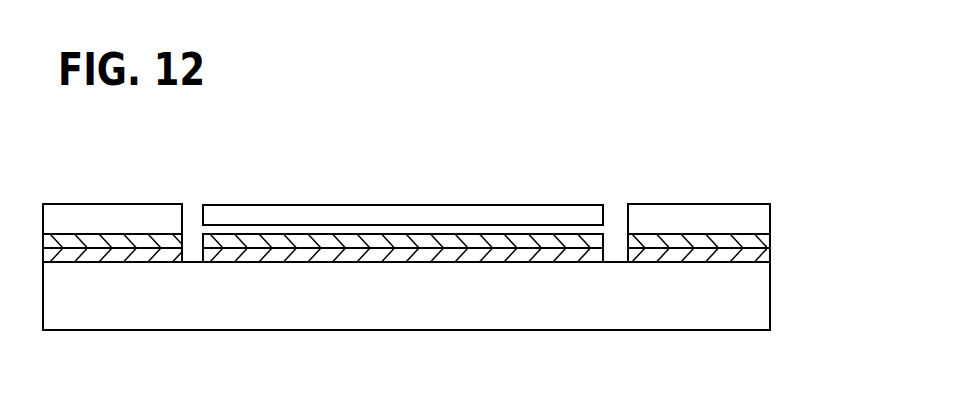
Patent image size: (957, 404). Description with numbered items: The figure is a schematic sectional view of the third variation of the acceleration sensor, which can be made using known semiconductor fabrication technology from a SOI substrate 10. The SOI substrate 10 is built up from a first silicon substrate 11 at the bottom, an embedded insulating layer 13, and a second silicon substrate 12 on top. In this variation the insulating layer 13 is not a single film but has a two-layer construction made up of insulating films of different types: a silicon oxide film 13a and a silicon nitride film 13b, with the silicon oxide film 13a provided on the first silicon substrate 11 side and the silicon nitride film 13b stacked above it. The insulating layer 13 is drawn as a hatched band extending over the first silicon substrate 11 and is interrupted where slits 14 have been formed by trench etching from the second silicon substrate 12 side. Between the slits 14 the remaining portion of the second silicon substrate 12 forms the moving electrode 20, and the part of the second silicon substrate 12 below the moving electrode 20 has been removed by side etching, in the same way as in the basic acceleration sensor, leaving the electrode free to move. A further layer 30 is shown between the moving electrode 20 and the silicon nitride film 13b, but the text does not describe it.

The SOI substrate 10 is at (747, 330).
The first silicon substrate 11 is at (760, 306).
The second silicon substrate 12 is at (762, 222).
The insulating layer 13 is at (470, 207).
The silicon oxide film 13a is at (765, 256).
The silicon nitride film 13b is at (765, 242).
The slits 14 is at (613, 217).
The moving electrode 20 is at (372, 217).
The adhesive layer 30 is at (458, 230).